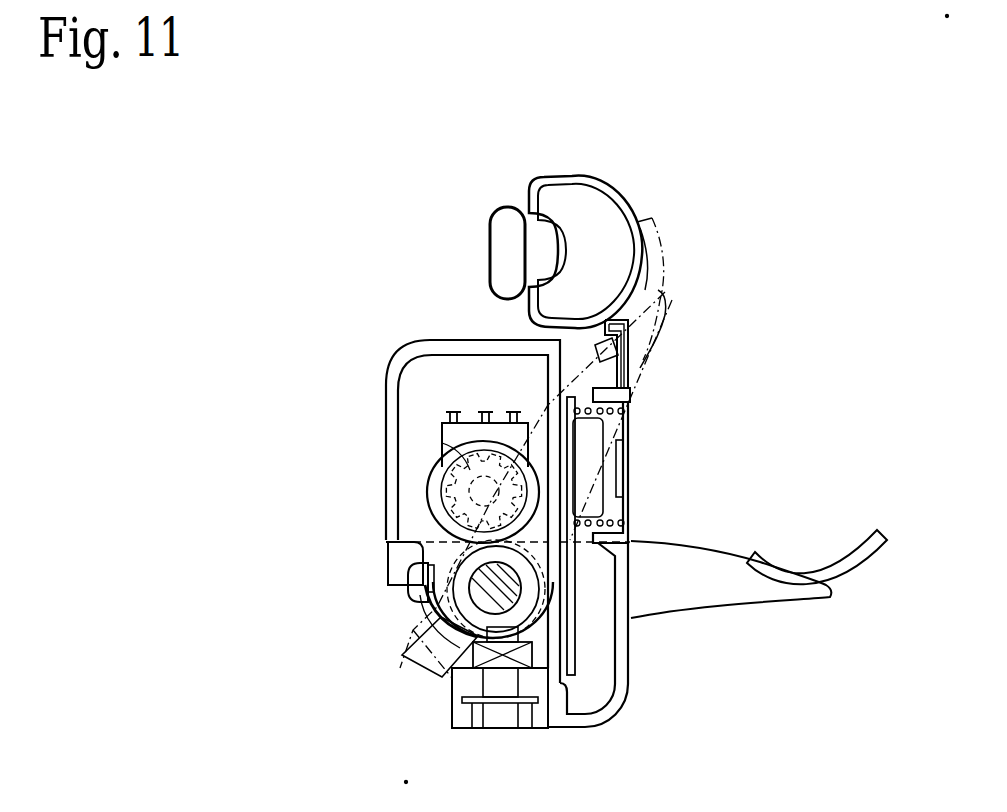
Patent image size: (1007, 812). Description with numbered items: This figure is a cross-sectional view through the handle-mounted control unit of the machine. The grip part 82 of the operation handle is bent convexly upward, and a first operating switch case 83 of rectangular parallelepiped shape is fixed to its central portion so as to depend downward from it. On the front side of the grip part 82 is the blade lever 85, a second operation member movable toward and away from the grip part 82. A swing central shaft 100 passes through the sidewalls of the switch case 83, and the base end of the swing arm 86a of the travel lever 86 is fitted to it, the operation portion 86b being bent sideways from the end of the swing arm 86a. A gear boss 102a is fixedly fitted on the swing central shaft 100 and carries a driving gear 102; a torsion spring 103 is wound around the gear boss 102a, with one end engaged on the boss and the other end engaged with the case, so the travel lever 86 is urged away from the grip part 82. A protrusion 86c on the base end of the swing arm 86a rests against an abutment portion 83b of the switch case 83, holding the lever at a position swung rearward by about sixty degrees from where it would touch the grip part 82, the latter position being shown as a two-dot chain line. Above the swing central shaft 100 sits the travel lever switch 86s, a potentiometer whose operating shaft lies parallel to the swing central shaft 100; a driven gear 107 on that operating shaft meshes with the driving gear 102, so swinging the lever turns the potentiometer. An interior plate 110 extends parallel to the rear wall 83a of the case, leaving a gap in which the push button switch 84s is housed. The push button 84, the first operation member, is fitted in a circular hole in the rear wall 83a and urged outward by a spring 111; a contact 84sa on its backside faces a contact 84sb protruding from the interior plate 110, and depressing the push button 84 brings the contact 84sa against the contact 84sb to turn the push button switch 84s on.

The blade lever 85 is at (505, 207).
The grip part 82 is at (582, 179).
The first operating switch case 83 is at (455, 342).
The rear wall 83a is at (630, 588).
The abutment portion 83b is at (398, 533).
The push button 84 is at (630, 440).
The push button switch 84s is at (746, 458).
The contact 84sa is at (620, 470).
The contact 84sb is at (596, 503).
The travel lever 86 is at (643, 363).
The swing arm 86a is at (700, 614).
The operation portion 86b is at (867, 563).
The protrusion 86c is at (407, 570).
The travel lever switch 86s is at (442, 443).
The swing central shaft 100 is at (430, 650).
The driving gear 102 is at (605, 620).
The gear boss 102a is at (425, 592).
The torsion spring 103 is at (440, 637).
The driven gear 107 is at (475, 510).
The interior plate 110 is at (556, 373).
The spring 111 is at (630, 392).